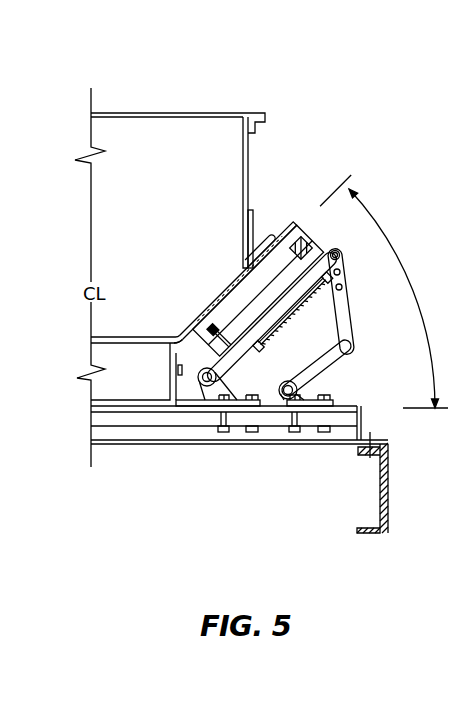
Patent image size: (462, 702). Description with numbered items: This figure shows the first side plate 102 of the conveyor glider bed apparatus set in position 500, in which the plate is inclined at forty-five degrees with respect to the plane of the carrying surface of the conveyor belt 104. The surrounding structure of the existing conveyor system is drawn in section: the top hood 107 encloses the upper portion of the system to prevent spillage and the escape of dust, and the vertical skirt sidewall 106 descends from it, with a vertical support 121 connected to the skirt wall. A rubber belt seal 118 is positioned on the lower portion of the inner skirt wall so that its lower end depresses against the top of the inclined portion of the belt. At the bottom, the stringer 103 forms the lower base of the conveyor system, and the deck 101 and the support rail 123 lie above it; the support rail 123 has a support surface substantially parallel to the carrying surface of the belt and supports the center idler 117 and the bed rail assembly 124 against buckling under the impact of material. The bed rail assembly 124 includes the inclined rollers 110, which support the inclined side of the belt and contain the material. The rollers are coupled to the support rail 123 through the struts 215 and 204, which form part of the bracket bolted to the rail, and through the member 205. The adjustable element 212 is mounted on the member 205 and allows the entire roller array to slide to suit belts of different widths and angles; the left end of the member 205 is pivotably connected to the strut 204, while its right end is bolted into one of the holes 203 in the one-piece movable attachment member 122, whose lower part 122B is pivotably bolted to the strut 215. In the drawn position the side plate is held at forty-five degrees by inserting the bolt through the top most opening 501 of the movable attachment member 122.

The position 500 is at (185, 42).
The top hood 107 is at (186, 112).
The vertical skirt sidewall 106 is at (248, 170).
The rubber belt seal 118 is at (261, 220).
The bed rail assembly 124 is at (333, 169).
The holes 203 is at (335, 249).
The inclined rollers 110 is at (243, 292).
The adjustable element 212 is at (222, 297).
The conveyor belt 104 is at (217, 303).
The vertical support 121 is at (190, 343).
The top most opening 501 is at (340, 259).
The movable attachment member 122 is at (343, 308).
The side plate 102 is at (276, 343).
The linkage element 122B is at (335, 360).
The member 205 is at (228, 370).
The strut 215 is at (303, 391).
The center idler 117 is at (117, 385).
The support rail 123 is at (167, 417).
The strut 204 is at (210, 392).
The deck 101 is at (288, 447).
The stringer 103 is at (378, 492).